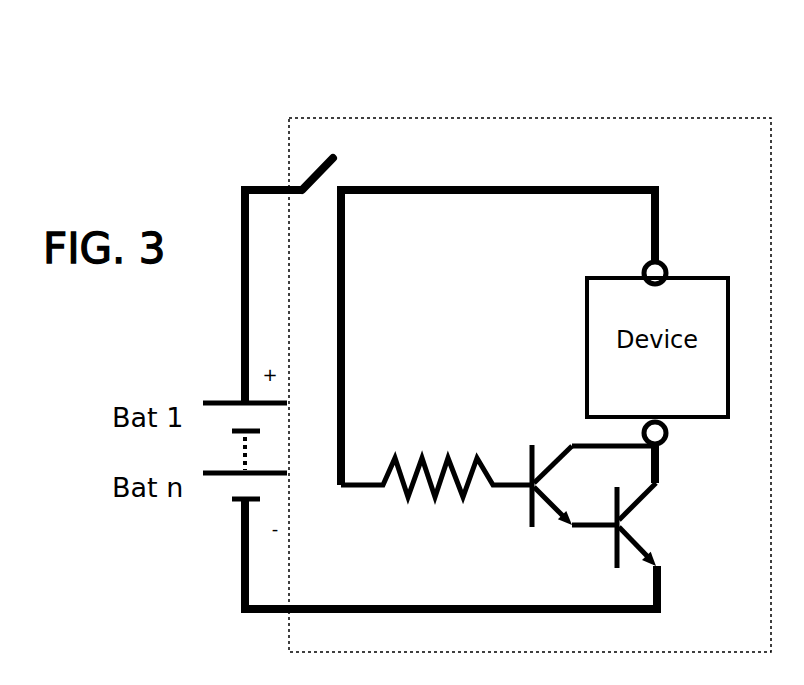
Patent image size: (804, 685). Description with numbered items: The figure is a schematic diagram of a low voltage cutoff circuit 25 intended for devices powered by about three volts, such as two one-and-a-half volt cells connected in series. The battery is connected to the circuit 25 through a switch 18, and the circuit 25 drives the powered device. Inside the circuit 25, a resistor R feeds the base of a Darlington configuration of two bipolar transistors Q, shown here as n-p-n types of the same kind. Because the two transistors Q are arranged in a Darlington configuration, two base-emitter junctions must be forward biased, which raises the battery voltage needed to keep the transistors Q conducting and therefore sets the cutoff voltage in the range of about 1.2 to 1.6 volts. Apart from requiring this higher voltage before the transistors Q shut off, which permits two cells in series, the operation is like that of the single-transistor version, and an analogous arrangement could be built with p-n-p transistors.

The switch 18 is at (342, 158).
The low voltage cutoff circuit 25 is at (645, 118).
The resistor R is at (435, 456).
The transistor Q is at (615, 506).